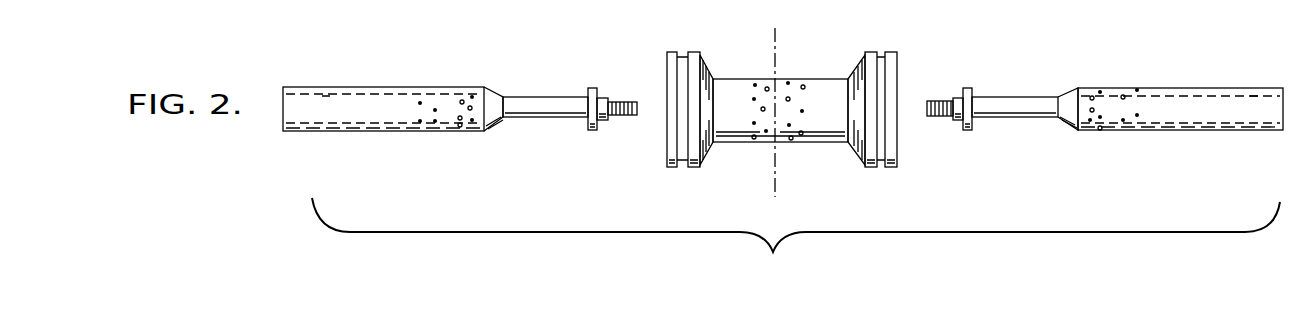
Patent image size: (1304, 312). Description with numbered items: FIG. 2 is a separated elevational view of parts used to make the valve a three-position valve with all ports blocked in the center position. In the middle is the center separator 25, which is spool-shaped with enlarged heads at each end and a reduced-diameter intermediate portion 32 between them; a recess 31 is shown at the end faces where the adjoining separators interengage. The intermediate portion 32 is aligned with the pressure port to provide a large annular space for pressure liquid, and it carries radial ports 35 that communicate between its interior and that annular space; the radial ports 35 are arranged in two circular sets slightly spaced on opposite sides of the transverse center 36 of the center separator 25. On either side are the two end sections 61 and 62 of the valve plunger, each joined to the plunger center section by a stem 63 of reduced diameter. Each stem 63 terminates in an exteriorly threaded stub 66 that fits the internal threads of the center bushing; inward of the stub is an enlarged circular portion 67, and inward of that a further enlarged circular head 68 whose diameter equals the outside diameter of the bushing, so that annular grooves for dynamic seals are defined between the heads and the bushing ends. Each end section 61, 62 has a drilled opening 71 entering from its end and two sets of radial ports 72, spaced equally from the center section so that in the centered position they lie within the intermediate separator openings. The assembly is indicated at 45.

The center separator 25 is at (739, 72).
The recess 31 is at (667, 58).
The reduced-diameter intermediate portion 32 is at (827, 143).
The radial ports 35 is at (803, 86).
The transverse center 36 is at (778, 32).
The handle assembly 45 is at (796, 126).
The end section 61 is at (408, 80).
The end section 62 is at (1185, 84).
The stem 63 is at (530, 97).
The exteriorly threaded stub 66 is at (625, 116).
The enlarged circular portion 67 is at (603, 98).
The enlarged circular head 68 is at (592, 130).
The drilled opening 71 is at (317, 102).
The radial ports 72 is at (461, 131).